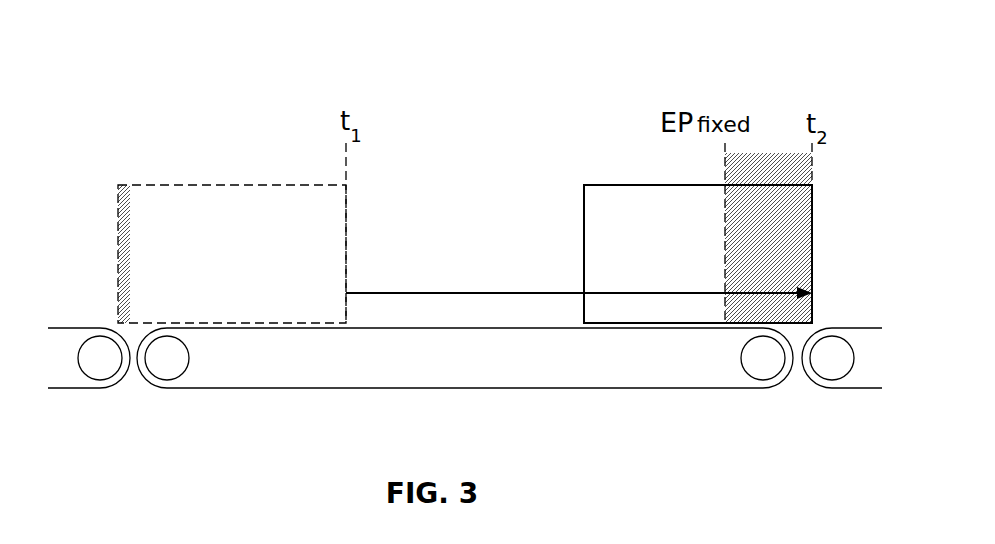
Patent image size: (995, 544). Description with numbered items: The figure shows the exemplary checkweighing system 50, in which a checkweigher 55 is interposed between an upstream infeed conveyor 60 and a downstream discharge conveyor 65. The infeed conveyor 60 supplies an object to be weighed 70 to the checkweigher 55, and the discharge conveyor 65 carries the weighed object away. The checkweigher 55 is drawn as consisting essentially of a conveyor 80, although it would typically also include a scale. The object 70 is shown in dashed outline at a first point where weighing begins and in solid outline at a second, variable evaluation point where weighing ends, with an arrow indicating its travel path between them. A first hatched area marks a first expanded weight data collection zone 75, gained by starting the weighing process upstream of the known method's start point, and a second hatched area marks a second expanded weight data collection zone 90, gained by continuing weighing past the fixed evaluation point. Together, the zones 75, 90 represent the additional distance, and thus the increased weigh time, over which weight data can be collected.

The checkweighing system 50 is at (211, 57).
The checkweigher 55 is at (268, 403).
The upstream infeed conveyor 60 is at (83, 381).
The downstream discharge conveyor 65 is at (846, 382).
The object to be weighed 70 is at (165, 225).
The first expanded weight data collection zone 75 is at (120, 265).
The conveyor 80 is at (713, 382).
The second expanded weight data collection zone 90 is at (798, 245).